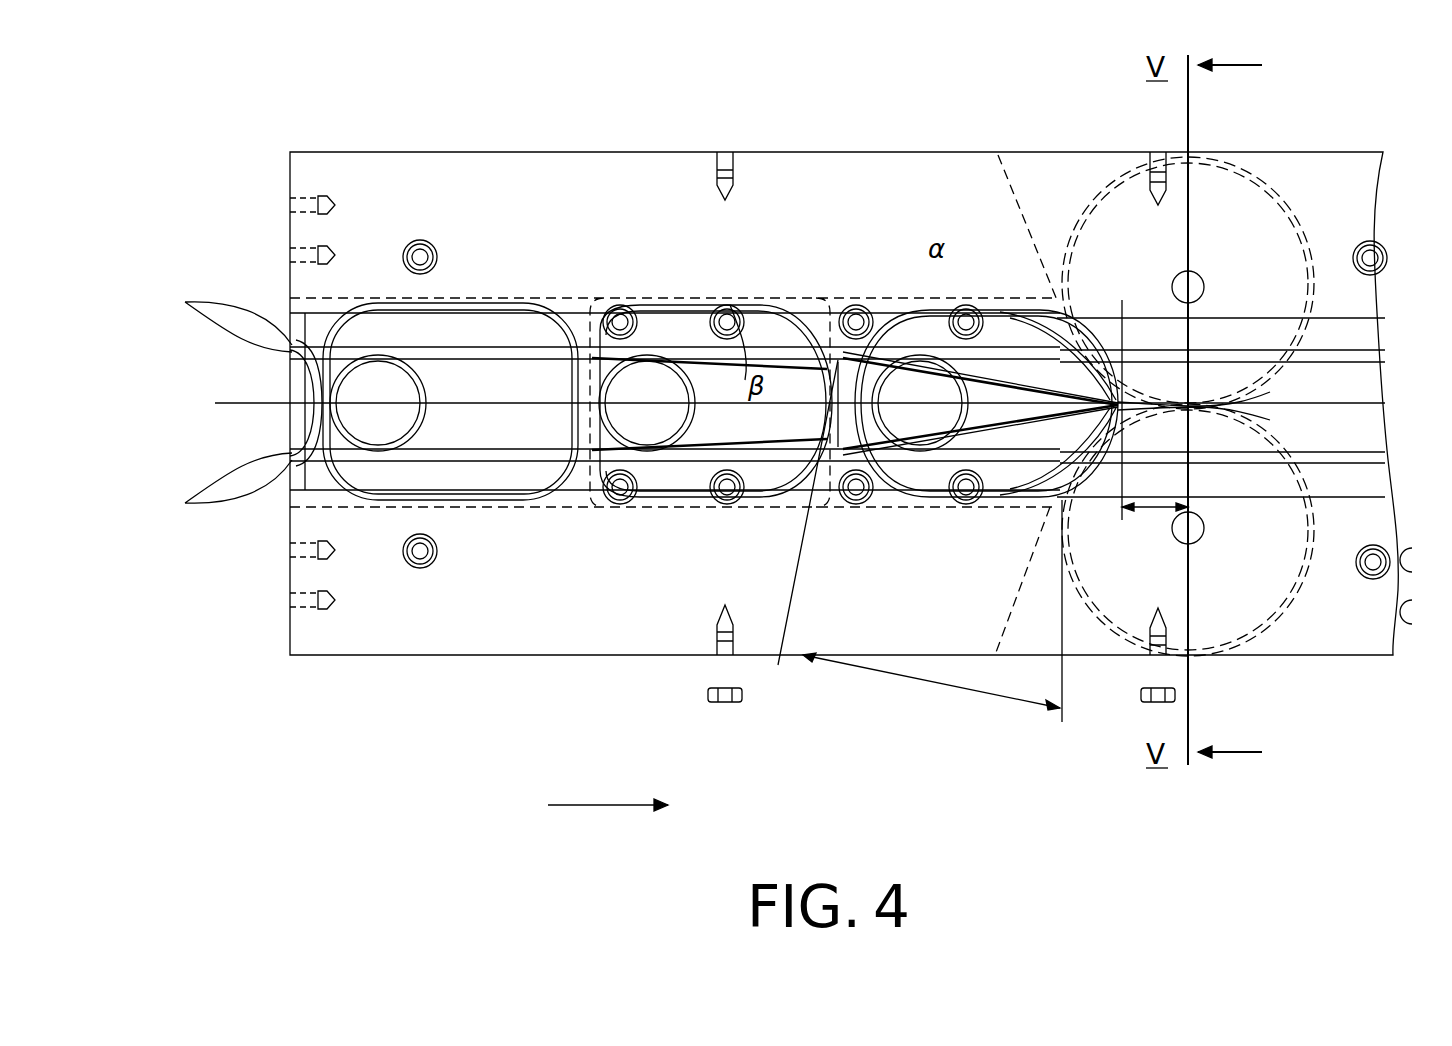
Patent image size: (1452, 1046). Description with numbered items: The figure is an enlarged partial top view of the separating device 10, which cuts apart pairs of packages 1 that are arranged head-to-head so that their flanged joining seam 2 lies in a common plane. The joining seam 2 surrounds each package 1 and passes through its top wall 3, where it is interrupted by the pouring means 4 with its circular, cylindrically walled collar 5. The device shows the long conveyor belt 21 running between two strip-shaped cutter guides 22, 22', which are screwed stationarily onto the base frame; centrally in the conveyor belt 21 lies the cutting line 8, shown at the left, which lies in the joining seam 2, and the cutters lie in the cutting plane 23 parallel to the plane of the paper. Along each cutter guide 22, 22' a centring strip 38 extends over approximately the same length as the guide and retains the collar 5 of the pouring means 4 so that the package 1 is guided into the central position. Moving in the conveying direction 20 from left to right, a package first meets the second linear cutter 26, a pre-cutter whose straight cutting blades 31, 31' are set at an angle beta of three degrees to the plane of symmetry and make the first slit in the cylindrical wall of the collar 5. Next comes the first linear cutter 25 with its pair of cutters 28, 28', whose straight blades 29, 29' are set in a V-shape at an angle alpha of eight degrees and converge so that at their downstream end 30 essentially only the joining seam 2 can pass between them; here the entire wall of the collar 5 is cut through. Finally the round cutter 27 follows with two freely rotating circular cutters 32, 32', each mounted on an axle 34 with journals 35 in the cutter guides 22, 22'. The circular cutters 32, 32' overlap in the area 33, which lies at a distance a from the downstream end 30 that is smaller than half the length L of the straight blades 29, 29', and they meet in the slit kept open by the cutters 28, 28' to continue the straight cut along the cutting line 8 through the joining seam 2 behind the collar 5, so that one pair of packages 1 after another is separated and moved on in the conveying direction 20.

The package 1 is at (380, 500).
The joining seam 2 is at (728, 403).
The top wall 3 is at (470, 330).
The pouring means 4 is at (430, 380).
The collar 5 is at (372, 365).
The cutting line 8 is at (230, 402).
The separating device 10 is at (275, 130).
The conveying direction 20 is at (605, 805).
The conveyor belt 21 is at (1372, 395).
The cutter guide 22 is at (885, 125).
The cutter guide 22' is at (911, 671).
The cutting plane 23 is at (880, 736).
The first linear cutter 25 is at (913, 330).
The second linear cutter 26 is at (660, 330).
The round cutter 27 is at (1243, 170).
The cutter 28 is at (1033, 290).
The cutter 28' is at (1030, 509).
The straight blade 29 is at (1052, 319).
The straight blade 29' is at (995, 498).
The downstream end 30 is at (1122, 500).
The straight cutting blade 31 is at (709, 299).
The straight cutting blade 31' is at (709, 513).
The circular cutter 32 is at (1217, 242).
The circular cutter 32' is at (1202, 564).
The overlap area 33 is at (1200, 407).
The axle 34 is at (1190, 528).
The journals 35 is at (1195, 287).
The centring strip 38 is at (1323, 360).